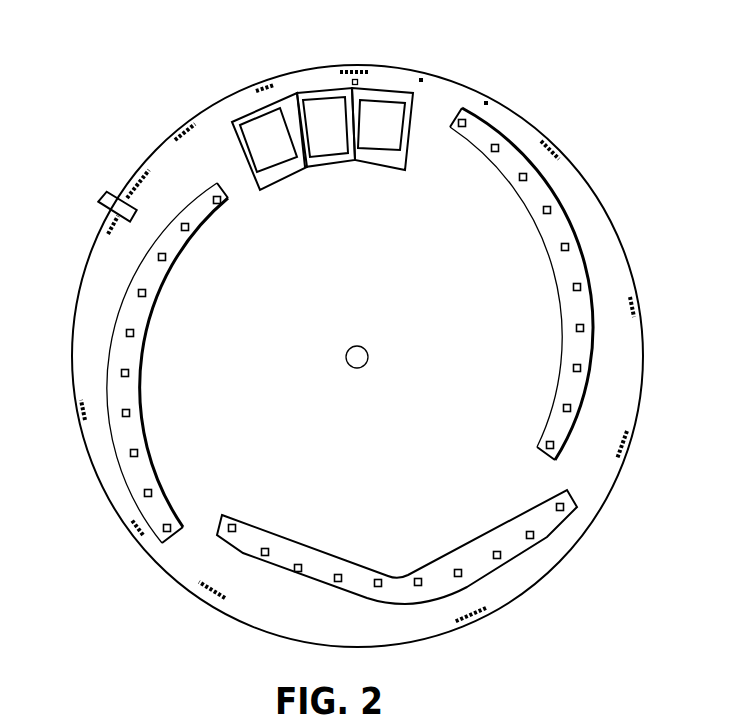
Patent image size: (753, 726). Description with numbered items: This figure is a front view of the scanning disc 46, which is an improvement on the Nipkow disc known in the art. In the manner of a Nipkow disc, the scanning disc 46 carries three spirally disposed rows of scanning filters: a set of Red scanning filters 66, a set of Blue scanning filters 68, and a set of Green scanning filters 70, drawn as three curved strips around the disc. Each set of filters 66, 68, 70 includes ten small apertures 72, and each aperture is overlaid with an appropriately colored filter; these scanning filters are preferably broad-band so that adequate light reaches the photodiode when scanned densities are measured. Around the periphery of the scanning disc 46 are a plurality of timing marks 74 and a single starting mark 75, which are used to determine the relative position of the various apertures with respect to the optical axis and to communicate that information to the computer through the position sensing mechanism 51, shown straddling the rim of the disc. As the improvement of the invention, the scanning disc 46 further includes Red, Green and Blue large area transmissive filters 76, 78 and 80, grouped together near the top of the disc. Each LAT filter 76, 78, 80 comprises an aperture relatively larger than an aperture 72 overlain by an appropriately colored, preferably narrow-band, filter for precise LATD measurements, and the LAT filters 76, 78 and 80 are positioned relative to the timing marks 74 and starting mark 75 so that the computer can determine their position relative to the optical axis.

The scanning disc 46 is at (514, 99).
The position sensing mechanism 51 is at (98, 204).
The set of Red scanning filters 66 is at (148, 348).
The set of Blue scanning filters 68 is at (555, 350).
The set of Green scanning filters 70 is at (465, 537).
The apertures 72 is at (218, 203).
The timing marks 74 is at (122, 193).
The starting mark 75 is at (358, 82).
The Red large area transmissive filter 76 is at (282, 174).
The Green large area transmissive filter 78 is at (335, 158).
The Blue large area transmissive filter 80 is at (383, 160).